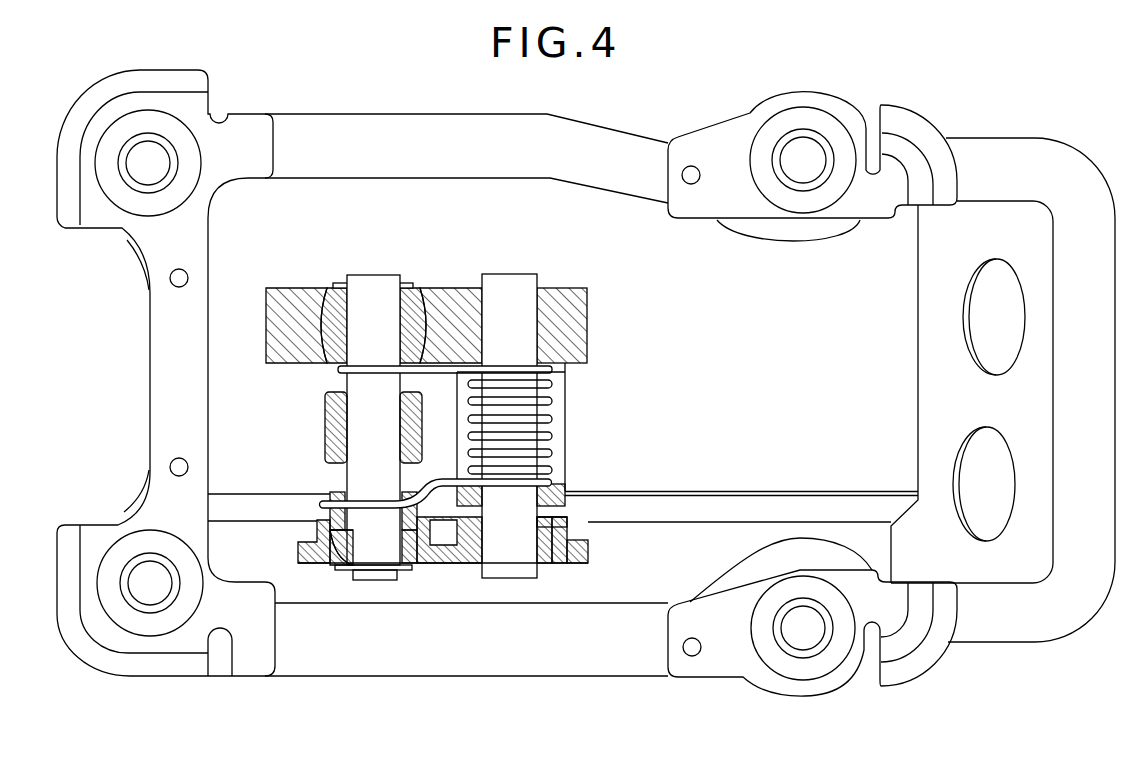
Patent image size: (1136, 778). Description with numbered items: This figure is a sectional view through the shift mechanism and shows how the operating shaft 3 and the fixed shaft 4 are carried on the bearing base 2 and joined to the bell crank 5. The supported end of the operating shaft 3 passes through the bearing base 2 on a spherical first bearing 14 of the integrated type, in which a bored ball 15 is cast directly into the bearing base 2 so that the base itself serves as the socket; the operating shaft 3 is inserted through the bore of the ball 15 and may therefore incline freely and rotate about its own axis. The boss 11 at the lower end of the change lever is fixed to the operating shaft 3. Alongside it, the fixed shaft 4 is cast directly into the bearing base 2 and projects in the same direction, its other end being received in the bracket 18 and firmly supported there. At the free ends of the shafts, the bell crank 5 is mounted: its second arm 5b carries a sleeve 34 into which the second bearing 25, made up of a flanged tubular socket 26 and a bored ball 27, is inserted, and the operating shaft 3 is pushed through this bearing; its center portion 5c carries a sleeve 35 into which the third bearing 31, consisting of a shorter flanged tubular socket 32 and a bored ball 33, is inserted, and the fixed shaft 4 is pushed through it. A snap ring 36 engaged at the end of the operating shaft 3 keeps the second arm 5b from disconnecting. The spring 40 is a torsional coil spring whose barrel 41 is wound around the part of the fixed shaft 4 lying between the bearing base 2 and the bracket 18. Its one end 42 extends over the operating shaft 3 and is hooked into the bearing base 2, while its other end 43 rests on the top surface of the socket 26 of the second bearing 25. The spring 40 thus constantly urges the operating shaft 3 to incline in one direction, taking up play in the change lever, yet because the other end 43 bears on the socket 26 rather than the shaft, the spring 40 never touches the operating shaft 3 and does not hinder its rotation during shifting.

The bearing base 2 is at (568, 316).
The operating shaft 3 is at (376, 300).
The fixed shaft 4 is at (512, 292).
The bell crank 5 is at (444, 622).
The second arm 5b is at (298, 546).
The center portion 5c is at (588, 547).
The boss 11 is at (328, 424).
The first bearing 14 is at (336, 280).
The ball 15 is at (410, 303).
The bracket 18 is at (566, 488).
The second bearing 25 is at (352, 644).
The flanged tubular socket 26 is at (325, 567).
The bored ball 27 is at (353, 565).
The third bearing 31 is at (577, 627).
The flanged tubular socket 32 is at (553, 563).
The bored ball 33 is at (532, 563).
The sleeve 34 is at (330, 510).
The sleeve 35 is at (560, 528).
The snap ring 36 is at (378, 572).
The spring 40 is at (559, 399).
The barrel 41 is at (548, 420).
The one end 42 is at (368, 372).
The other end 43 is at (357, 496).